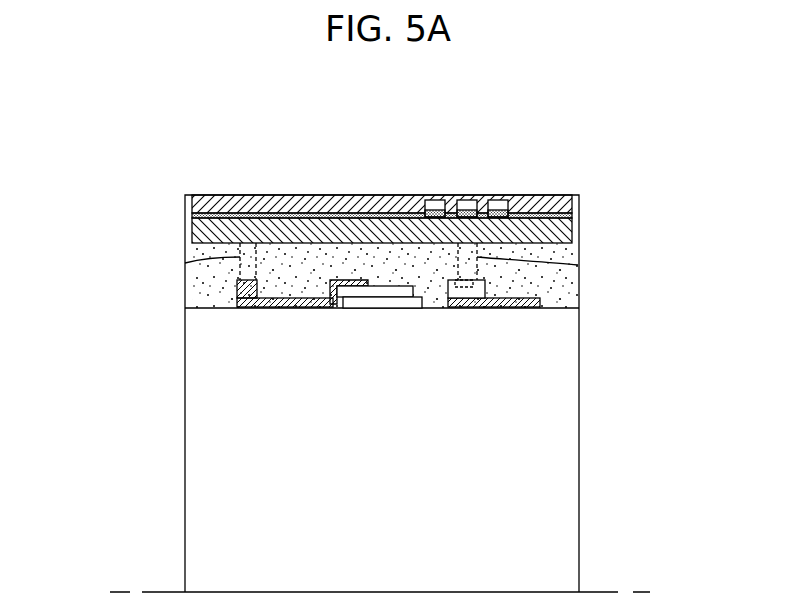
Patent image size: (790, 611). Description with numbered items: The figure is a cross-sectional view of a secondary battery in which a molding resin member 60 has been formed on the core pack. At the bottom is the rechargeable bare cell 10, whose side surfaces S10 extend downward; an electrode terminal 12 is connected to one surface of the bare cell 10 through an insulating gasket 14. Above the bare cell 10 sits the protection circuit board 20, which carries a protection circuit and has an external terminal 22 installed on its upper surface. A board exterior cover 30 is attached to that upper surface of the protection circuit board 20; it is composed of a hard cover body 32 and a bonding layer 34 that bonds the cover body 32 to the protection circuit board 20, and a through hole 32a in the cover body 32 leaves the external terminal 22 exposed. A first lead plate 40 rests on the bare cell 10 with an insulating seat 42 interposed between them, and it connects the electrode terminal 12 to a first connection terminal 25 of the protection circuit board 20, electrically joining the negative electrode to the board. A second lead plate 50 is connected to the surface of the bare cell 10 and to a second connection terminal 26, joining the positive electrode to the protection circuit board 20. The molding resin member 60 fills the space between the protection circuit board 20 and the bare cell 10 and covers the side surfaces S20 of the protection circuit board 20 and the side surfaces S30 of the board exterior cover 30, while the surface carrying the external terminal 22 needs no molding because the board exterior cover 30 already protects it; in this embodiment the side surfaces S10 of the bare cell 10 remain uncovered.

The bare cell 10 is at (580, 412).
The electrode terminal 12 is at (358, 305).
The insulating gasket 14 is at (397, 308).
The protection circuit board 20 is at (580, 227).
The external terminal 22 is at (437, 195).
The first connection terminal 25 is at (185, 263).
The second connection terminal 26 is at (580, 266).
The board exterior cover 30 is at (363, 181).
The cover body 32 is at (350, 195).
The through hole 32a is at (497, 195).
The bonding layer 34 is at (185, 217).
The first lead plate 40 is at (233, 308).
The insulating seat 42 is at (297, 307).
The second lead plate 50 is at (483, 307).
The molding resin member 60 is at (575, 298).
The side surfaces of the bare cell S10 is at (185, 443).
The side surfaces of the protection circuit board S20 is at (185, 230).
The side surfaces of the board exterior cover S30 is at (185, 203).